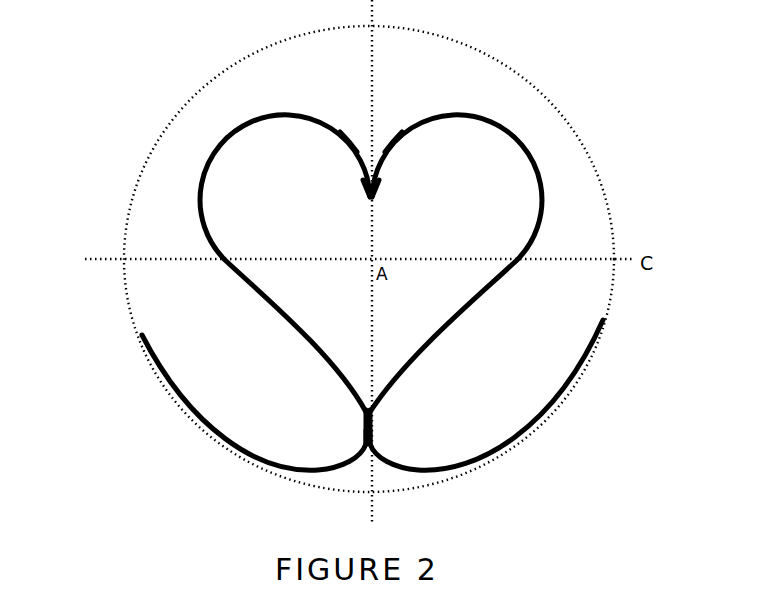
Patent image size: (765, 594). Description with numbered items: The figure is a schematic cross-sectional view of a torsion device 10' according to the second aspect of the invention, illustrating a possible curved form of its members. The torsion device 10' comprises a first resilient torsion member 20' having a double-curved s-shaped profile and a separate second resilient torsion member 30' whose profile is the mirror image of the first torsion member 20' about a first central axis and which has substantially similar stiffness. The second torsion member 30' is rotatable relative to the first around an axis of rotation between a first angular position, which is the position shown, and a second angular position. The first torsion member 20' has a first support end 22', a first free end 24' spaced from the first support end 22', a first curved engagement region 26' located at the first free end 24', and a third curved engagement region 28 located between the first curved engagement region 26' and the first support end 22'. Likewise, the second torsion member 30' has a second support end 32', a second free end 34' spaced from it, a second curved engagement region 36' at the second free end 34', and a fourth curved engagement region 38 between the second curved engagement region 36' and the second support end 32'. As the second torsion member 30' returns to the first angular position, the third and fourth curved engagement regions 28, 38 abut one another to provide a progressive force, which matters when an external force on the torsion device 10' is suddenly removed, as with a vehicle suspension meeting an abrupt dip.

The torsion device 10' is at (79, 64).
The first resilient torsion member 20' is at (276, 263).
The first support end 22' is at (253, 415).
The first free end 24' is at (333, 203).
The first curved engagement region 26' is at (345, 107).
The third curved engagement region 28 is at (360, 450).
The second resilient torsion member 30' is at (456, 263).
The second support end 32' is at (492, 395).
The second free end 34' is at (410, 203).
The second curved engagement region 36' is at (401, 107).
The fourth curved engagement region 38 is at (379, 450).